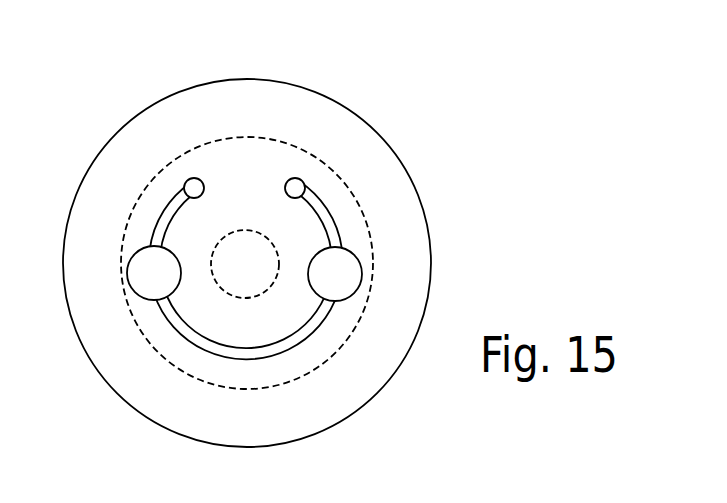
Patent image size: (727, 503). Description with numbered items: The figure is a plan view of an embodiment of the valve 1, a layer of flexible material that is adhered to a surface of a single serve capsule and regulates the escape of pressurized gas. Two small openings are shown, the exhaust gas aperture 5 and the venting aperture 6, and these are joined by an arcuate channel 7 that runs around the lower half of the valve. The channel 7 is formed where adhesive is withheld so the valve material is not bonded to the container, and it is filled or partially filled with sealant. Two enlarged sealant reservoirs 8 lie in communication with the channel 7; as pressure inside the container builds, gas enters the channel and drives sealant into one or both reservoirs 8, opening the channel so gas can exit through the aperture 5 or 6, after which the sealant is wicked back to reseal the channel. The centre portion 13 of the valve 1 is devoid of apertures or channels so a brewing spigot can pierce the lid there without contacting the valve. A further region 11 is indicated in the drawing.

The valve 1 is at (371, 274).
The exhaust gas aperture 5 is at (194, 186).
The venting aperture 6 is at (295, 187).
The channel 7 is at (287, 352).
The sealant reservoir 8 is at (153, 288).
The annular region 11 is at (252, 180).
The centre portion 13 is at (238, 279).